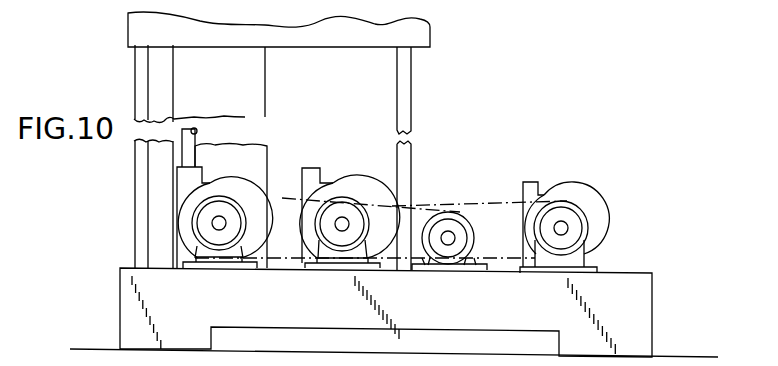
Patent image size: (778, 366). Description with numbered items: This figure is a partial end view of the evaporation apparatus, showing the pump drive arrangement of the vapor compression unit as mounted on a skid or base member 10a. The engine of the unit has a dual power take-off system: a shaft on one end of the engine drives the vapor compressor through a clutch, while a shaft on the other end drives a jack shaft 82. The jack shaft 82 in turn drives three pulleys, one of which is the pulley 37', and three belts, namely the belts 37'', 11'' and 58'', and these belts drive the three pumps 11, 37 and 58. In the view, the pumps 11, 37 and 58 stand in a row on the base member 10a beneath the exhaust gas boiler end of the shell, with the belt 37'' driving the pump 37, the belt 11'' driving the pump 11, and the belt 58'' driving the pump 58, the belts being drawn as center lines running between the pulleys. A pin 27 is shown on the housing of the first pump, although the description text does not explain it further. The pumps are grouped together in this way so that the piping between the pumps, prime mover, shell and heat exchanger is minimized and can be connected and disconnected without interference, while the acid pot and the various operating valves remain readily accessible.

The base member 10a is at (646, 320).
The pump 11 is at (582, 229).
The belt 11'' is at (554, 208).
The pin 27 is at (197, 133).
The pump 37 is at (185, 206).
The pulley 37' is at (365, 219).
The belt 37'' is at (365, 189).
The pump 58 is at (350, 208).
The belt 58'' is at (477, 192).
The jack shaft 82 is at (450, 231).